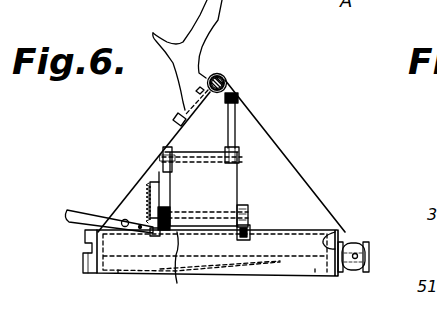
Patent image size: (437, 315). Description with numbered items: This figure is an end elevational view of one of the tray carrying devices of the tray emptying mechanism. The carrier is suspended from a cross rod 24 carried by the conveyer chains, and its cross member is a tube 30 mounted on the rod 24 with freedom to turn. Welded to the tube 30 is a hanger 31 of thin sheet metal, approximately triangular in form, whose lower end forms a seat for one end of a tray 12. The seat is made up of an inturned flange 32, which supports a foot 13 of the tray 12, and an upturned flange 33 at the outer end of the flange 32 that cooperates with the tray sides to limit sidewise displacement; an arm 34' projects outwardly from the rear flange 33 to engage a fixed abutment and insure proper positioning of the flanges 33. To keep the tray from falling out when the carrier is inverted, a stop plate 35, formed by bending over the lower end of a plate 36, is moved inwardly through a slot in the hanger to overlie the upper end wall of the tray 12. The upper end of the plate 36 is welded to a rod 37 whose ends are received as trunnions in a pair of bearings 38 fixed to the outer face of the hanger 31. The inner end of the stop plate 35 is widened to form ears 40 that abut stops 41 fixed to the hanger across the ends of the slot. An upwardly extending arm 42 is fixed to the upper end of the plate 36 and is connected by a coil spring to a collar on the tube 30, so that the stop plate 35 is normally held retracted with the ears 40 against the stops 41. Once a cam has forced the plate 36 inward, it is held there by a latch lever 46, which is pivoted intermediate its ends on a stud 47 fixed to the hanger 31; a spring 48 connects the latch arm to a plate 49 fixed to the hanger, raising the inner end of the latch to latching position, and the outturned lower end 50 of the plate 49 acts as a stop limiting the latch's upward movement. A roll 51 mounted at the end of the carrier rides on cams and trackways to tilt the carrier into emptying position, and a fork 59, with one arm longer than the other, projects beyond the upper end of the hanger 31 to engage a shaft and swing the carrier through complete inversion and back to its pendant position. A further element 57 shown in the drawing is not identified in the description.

The tray 12 is at (304, 231).
The foot 13 is at (277, 262).
The cross rod 24 is at (227, 72).
The tube 30 is at (228, 78).
The hanger 31 is at (268, 154).
The inturned flange 32 is at (118, 273).
The flange 33 is at (93, 246).
The arm 34' is at (65, 273).
The stop plate 35 is at (207, 225).
The plate 36 is at (218, 182).
The rod 37 is at (192, 117).
The bearing 38 is at (240, 148).
The ear 40 is at (241, 216).
The stop 41 is at (250, 232).
The arm 42 is at (236, 118).
The latch lever 46 is at (168, 268).
The stud 47 is at (123, 220).
The spring 48 is at (143, 203).
The plate 49 is at (163, 197).
The outturned lower end 50 is at (155, 234).
The roll 51 is at (369, 252).
The bolt 57 is at (205, 155).
The fork 59 is at (213, 27).